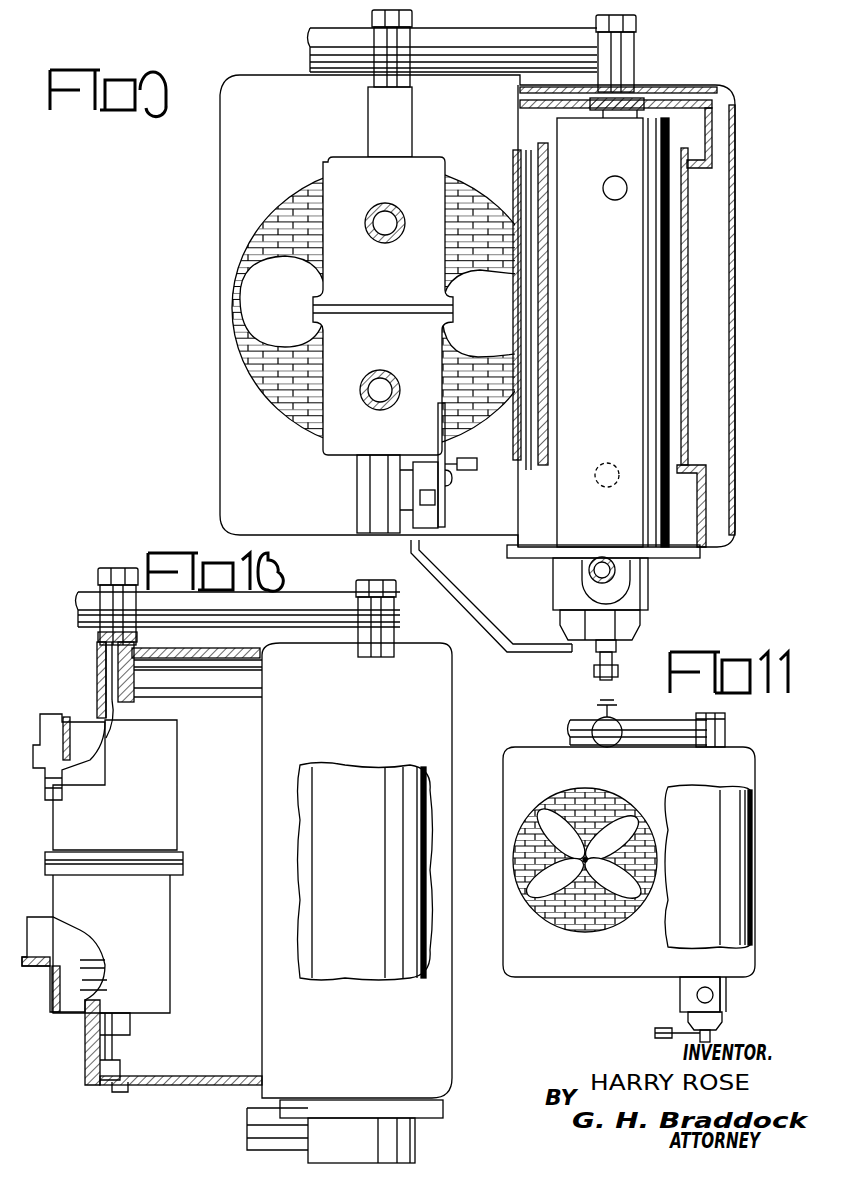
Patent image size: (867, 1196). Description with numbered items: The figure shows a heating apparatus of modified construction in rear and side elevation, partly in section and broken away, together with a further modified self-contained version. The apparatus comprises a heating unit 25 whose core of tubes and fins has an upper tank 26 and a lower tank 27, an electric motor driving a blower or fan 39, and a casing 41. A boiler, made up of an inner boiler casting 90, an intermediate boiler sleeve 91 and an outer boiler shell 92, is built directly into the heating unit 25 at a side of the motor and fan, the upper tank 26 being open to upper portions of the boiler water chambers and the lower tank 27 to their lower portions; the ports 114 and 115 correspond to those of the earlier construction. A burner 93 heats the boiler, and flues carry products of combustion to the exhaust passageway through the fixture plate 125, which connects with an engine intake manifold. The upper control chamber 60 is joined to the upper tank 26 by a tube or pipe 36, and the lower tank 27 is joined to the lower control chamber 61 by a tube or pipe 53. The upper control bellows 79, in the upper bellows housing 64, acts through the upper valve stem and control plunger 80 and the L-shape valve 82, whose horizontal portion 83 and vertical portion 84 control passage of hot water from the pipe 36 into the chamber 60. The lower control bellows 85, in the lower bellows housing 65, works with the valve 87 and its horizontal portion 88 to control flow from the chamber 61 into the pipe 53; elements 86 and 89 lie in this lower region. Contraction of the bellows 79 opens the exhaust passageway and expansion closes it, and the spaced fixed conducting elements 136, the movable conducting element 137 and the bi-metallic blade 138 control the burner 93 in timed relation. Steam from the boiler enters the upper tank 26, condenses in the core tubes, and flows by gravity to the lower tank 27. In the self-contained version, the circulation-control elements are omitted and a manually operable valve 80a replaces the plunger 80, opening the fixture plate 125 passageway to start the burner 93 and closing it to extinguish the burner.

In FIG. 9, the heating unit 25 is at (256, 222).
In FIG. 11, the heating unit 25 is at (585, 945).
In FIG. 9, the upper tank 26 is at (698, 137).
In FIG. 9, the lower tank 27 is at (700, 514).
In FIG. 10, the tube or pipe 36 is at (245, 700).
In FIG. 9, the blower or fan 39 is at (265, 310).
In FIG. 10, the blower or fan 39 is at (438, 812).
In FIG. 11, the blower or fan 39 is at (540, 818).
In FIG. 10, the casing 41 is at (448, 700).
In FIG. 11, the casing 41 is at (748, 782).
In FIG. 10, the tube or pipe 53 is at (232, 1088).
In FIG. 10, the upper control chamber 60 is at (70, 755).
In FIG. 10, the lower control chamber 61 is at (60, 998).
In FIG. 9, the upper bellows housing 64 is at (430, 172).
In FIG. 10, the upper bellows housing 64 is at (172, 772).
In FIG. 9, the lower bellows housing 65 is at (336, 452).
In FIG. 10, the lower bellows housing 65 is at (168, 920).
In FIG. 10, the upper control bellows 79 is at (100, 705).
In FIG. 10, the upper valve stem and control plunger 80 is at (140, 690).
In FIG. 11, the manually operable valve 80a is at (604, 705).
In FIG. 10, the L-shape valve 82 is at (97, 640).
In FIG. 10, the horizontal portion 83 is at (160, 650).
In FIG. 10, the vertical portion 84 is at (97, 668).
In FIG. 10, the control bellows 85 is at (105, 980).
In FIG. 10, the bushing 86 is at (120, 1028).
In FIG. 10, the valve 87 is at (95, 1075).
In FIG. 10, the horizontal portion 88 is at (118, 1090).
In FIG. 10, the angle bracket 89 is at (88, 1055).
In FIG. 9, the inner boiler casting 90 is at (645, 586).
In FIG. 10, the inner boiler casting 90 is at (412, 1150).
In FIG. 9, the intermediate boiler sleeve 91 is at (645, 408).
In FIG. 10, the intermediate boiler sleeve 91 is at (405, 893).
In FIG. 9, the outer boiler shell 92 is at (688, 349).
In FIG. 9, the burner 93 is at (640, 622).
In FIG. 11, the burner 93 is at (722, 1022).
In FIG. 9, the port 114 is at (612, 190).
In FIG. 9, the port 115 is at (608, 470).
In FIG. 9, the fixture plate 125 is at (545, 48).
In FIG. 10, the fixture plate 125 is at (274, 586).
In FIG. 11, the fixture plate 125 is at (675, 712).
In FIG. 9, the fixed conducting elements 136 is at (420, 515).
In FIG. 9, the movable conducting element 137 is at (428, 500).
In FIG. 9, the bi-metallic blade 138 is at (445, 462).